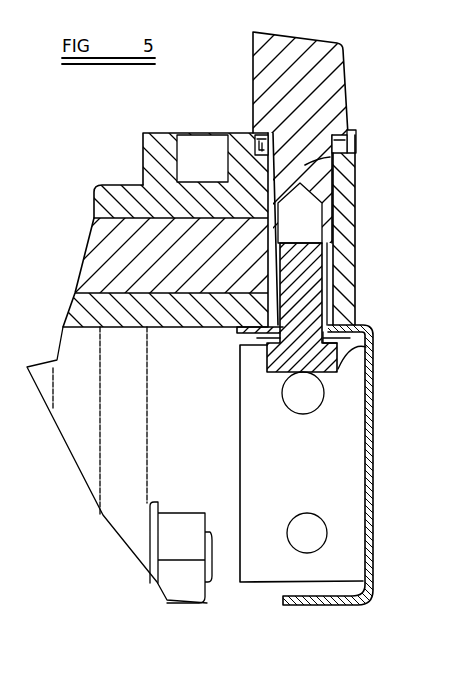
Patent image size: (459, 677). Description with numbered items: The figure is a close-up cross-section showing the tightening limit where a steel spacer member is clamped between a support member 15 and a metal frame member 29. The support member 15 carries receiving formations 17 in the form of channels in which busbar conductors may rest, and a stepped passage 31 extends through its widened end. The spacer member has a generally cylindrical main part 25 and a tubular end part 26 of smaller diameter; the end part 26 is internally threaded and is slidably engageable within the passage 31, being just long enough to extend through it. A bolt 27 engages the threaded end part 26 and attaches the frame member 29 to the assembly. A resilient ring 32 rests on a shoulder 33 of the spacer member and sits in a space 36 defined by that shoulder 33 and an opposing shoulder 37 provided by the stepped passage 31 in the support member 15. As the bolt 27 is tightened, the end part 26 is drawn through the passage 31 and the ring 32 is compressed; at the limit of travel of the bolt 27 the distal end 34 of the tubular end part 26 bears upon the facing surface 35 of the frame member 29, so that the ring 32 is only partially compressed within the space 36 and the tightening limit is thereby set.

The support member 15 is at (362, 273).
The receiving formation 17 is at (201, 150).
The main part 25 is at (343, 74).
The tubular end part 26 is at (355, 196).
The bolt 27 is at (372, 380).
The frame member 29 is at (375, 432).
The passage 31 is at (348, 243).
The resilient ring 32 is at (340, 148).
The shoulder 33 is at (355, 131).
The distal end 34 is at (330, 323).
The facing surface 35 is at (222, 327).
The space 36 is at (257, 138).
The opposing shoulder 37 is at (100, 200).